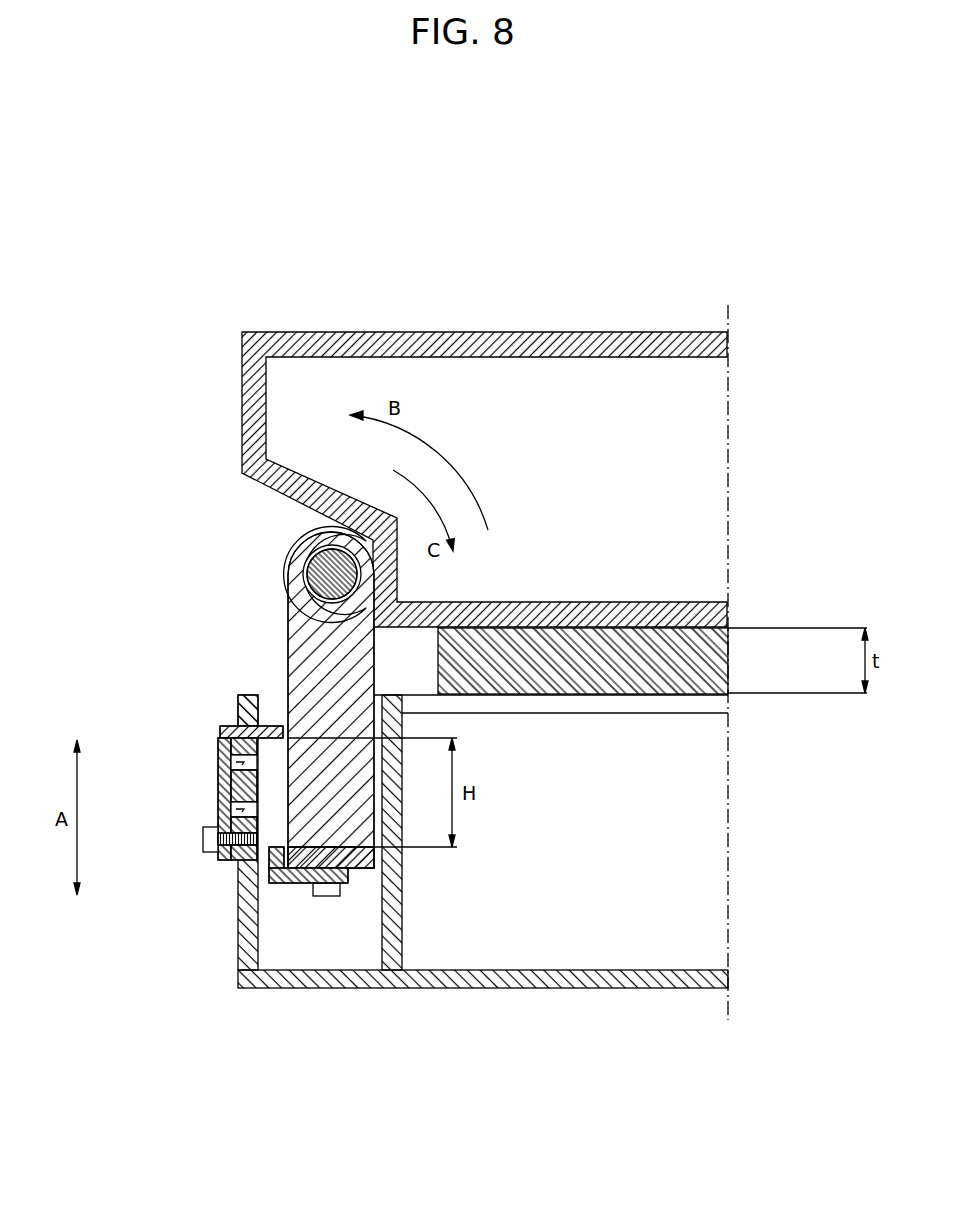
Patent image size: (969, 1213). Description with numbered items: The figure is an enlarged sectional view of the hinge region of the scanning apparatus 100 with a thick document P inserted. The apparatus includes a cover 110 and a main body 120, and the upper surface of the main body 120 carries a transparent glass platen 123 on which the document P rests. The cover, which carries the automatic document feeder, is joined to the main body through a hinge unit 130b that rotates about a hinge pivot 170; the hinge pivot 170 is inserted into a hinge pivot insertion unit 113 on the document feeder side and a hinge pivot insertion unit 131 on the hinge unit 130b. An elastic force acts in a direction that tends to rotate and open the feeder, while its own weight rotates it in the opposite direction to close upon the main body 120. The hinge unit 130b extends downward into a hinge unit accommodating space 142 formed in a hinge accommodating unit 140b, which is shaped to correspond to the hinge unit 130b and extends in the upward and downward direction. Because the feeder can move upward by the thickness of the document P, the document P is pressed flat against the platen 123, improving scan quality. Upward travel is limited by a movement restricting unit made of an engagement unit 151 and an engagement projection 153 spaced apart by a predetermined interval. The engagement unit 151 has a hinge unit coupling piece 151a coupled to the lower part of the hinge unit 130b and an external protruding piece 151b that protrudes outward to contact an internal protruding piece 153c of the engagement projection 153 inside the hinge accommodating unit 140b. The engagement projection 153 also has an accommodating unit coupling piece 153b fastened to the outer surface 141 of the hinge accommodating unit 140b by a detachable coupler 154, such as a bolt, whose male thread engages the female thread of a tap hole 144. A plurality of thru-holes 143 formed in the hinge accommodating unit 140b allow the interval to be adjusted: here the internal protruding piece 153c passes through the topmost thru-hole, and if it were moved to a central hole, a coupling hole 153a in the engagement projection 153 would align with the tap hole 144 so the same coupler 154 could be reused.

The scanning apparatus 100 is at (647, 327).
The cover 110 is at (435, 332).
The main body 120 is at (528, 990).
The platen 123 is at (713, 703).
The hinge unit 130b is at (292, 620).
The hinge pivot insertion unit 131 is at (300, 547).
The hinge pivot insertion unit 113 is at (300, 557).
The hinge pivot 170 is at (300, 585).
The hinge accommodating unit 140b is at (252, 983).
The outer surface 141 is at (227, 725).
The hinge unit accommodating space 142 is at (282, 947).
The thru-holes 143 is at (220, 768).
The tap hole 144 is at (272, 860).
The engagement unit 151 is at (308, 893).
The hinge unit coupling piece 151a is at (358, 890).
The external protruding piece 151b is at (300, 880).
The engagement projection 153 is at (220, 813).
The coupling hole 153a is at (220, 787).
The accommodating unit coupling piece 153b is at (220, 855).
The internal protruding piece 153c is at (268, 728).
The coupler 154 is at (207, 838).
The document P is at (713, 658).